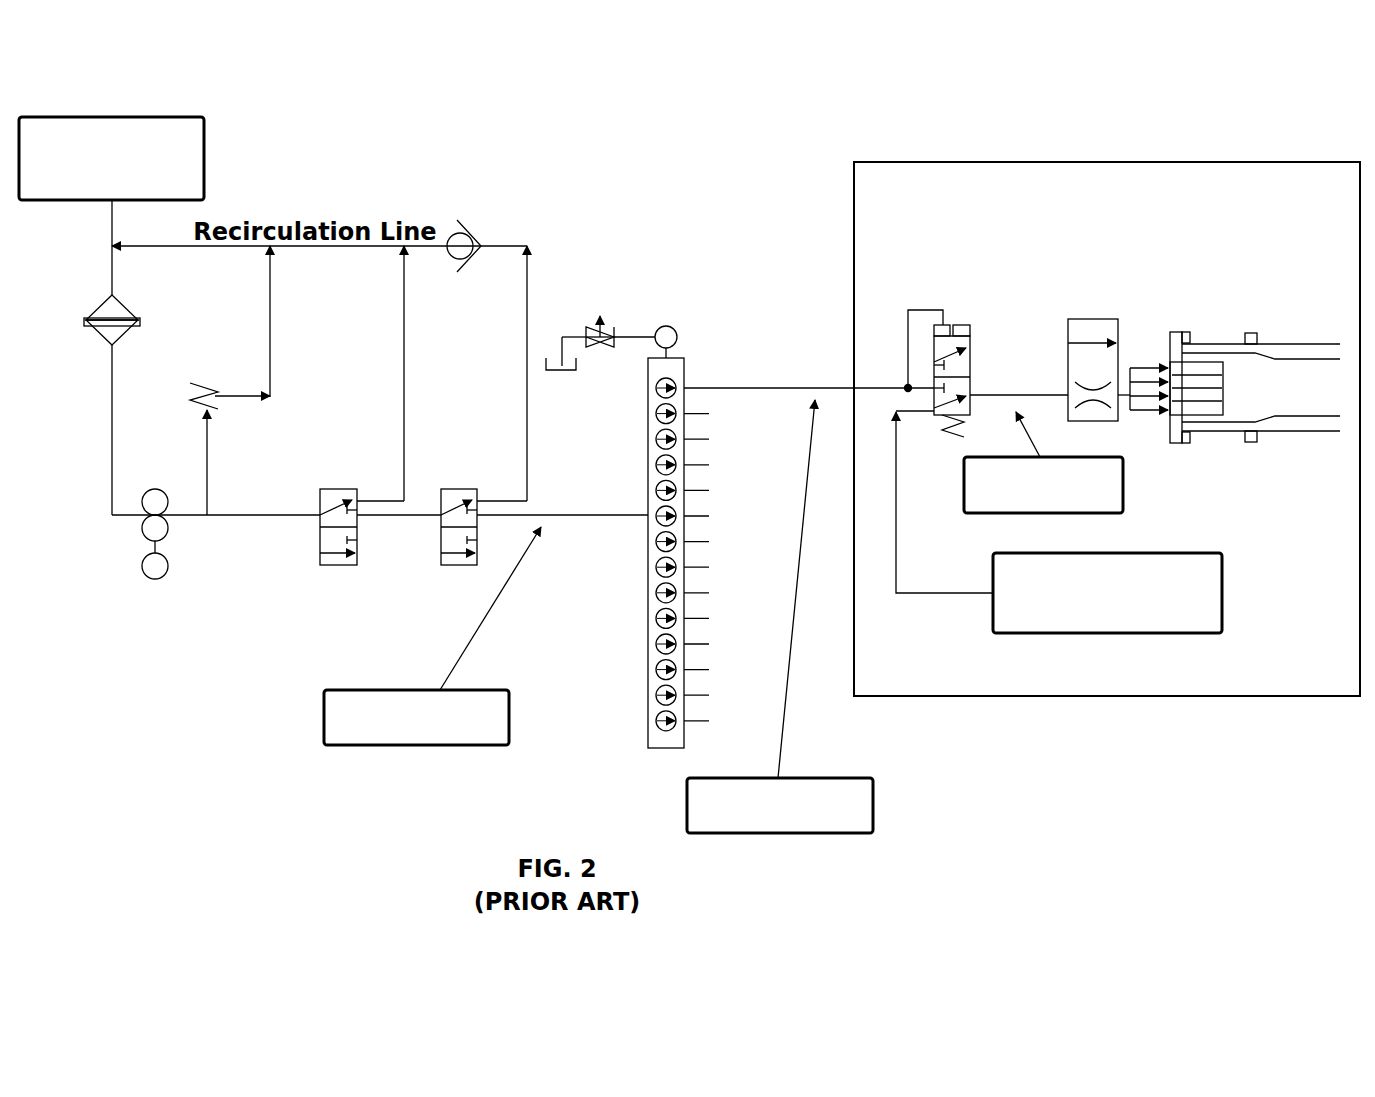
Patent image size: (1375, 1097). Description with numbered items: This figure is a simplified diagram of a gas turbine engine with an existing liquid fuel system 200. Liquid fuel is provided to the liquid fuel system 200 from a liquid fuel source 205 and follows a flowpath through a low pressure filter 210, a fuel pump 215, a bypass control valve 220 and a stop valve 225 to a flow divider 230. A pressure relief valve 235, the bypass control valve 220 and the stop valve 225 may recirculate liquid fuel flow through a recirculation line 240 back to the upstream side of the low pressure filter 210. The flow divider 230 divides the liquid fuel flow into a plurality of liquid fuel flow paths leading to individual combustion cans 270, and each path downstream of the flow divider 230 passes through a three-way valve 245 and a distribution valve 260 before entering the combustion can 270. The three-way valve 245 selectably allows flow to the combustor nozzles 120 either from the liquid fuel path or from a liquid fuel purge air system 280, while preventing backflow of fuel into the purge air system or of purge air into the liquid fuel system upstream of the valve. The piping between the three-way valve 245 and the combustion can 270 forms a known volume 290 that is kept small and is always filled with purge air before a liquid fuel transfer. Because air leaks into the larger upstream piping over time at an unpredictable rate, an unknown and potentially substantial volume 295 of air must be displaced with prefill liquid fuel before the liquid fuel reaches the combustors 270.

The liquid fuel system 200 is at (742, 150).
The liquid fuel source 205 is at (204, 160).
The low pressure filter 210 is at (92, 338).
The fuel pump 215 is at (166, 573).
The bypass control valve 220 is at (320, 545).
The stop valve 225 is at (441, 545).
The flow divider 230 is at (648, 680).
The pressure relief valve 235 is at (200, 386).
The recirculation line 240 is at (470, 232).
The three-way valve 245 is at (970, 345).
The distribution valve 260 is at (1118, 330).
The combustion can 270 is at (1228, 452).
The combustor nozzles 120 is at (1235, 383).
The liquid fuel purge air system 280 is at (1222, 630).
The known volume 290 is at (1103, 513).
The unknown volume 295 is at (452, 745).